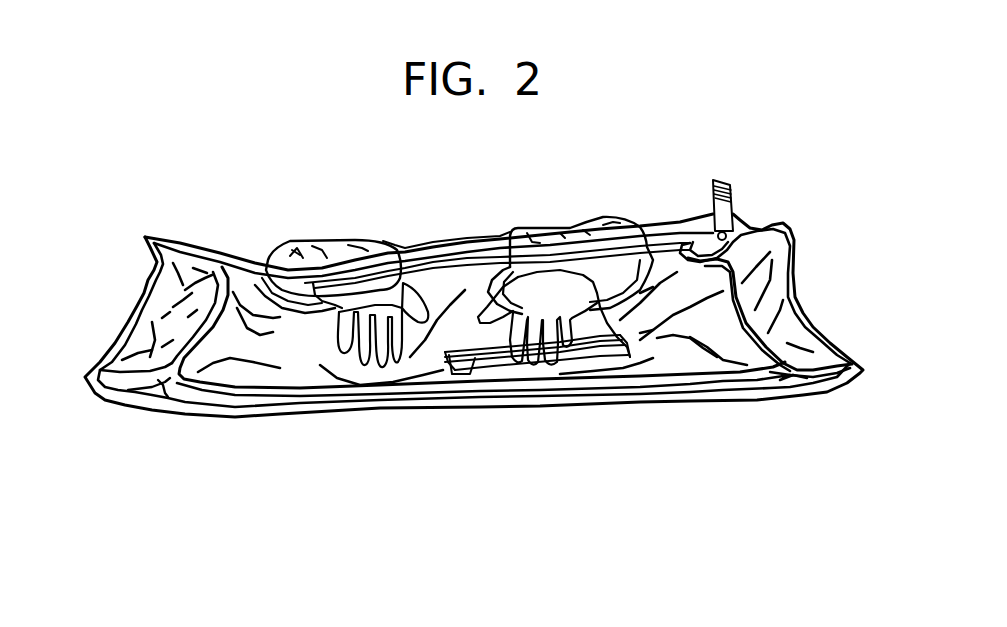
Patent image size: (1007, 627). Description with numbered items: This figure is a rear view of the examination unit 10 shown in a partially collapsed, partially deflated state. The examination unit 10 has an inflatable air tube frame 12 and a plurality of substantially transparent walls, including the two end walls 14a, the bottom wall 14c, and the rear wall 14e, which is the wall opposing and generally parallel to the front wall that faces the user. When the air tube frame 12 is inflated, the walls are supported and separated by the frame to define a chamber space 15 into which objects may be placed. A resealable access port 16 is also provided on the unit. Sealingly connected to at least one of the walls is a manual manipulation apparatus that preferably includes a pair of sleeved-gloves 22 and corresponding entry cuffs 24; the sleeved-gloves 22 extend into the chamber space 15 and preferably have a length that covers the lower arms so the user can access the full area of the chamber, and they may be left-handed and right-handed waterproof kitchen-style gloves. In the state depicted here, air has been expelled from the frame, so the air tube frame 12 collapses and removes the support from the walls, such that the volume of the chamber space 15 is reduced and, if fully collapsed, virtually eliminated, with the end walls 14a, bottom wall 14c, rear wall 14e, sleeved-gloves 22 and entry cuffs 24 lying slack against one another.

The examination unit 10 is at (753, 156).
The inflatable air tube frame 12 is at (474, 302).
The end walls 14a is at (809, 316).
The bottom wall 14c is at (168, 438).
The rear wall 14e is at (730, 424).
The chamber space 15 is at (512, 370).
The resealable access port 16 is at (537, 401).
The sleeved-gloves 22 is at (538, 281).
The entry cuffs 24 is at (341, 268).